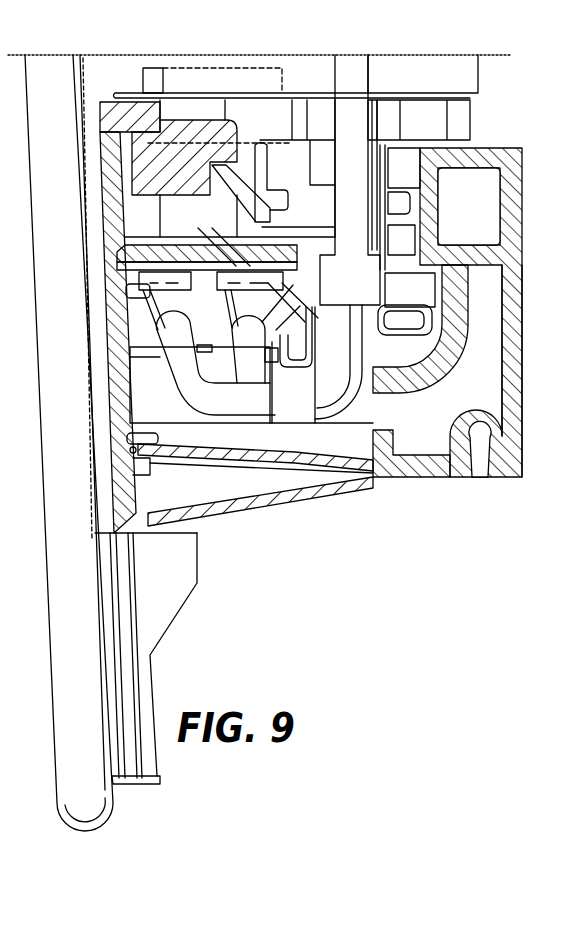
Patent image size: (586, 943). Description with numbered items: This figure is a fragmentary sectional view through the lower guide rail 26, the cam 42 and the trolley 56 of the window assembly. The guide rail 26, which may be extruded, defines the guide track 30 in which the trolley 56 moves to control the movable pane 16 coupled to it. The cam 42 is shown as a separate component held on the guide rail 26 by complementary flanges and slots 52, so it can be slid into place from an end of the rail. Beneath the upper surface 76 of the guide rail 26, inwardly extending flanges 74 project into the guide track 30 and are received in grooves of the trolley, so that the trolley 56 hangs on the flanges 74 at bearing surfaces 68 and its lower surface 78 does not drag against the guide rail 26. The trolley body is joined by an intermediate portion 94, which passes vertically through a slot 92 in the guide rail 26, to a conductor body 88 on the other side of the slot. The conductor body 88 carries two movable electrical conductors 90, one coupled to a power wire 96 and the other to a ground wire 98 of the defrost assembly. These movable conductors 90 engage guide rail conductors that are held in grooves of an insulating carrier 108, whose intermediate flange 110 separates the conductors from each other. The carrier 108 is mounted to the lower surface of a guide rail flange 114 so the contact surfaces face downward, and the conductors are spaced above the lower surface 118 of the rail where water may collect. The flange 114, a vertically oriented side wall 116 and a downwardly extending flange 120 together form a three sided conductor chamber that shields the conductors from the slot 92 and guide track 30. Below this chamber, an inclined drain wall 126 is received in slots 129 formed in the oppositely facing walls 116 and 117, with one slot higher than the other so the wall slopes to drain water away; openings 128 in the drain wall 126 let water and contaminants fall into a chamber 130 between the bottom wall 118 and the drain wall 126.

The movable pane 16 is at (385, 70).
The guide rail 26 is at (529, 378).
The guide track 30 is at (262, 150).
The cam 42 is at (136, 100).
The complementary flanges and slots 52 is at (205, 198).
The trolley 56 is at (288, 155).
The bearing surfaces 68 is at (398, 204).
The inwardly extending flanges 74 is at (289, 203).
The upper surface 76 is at (487, 148).
The lower surface 78 is at (397, 243).
The conductor body 88 is at (140, 410).
The electrical conductor 90 is at (283, 302).
The slot 92 is at (312, 326).
The intermediate portion 94 is at (357, 412).
The power wire 96 is at (248, 347).
The ground wire 98 is at (175, 357).
The carrier 108 is at (135, 291).
The intermediate flange 110 is at (215, 290).
The guide rail flange 114 is at (135, 242).
The side wall 116 is at (133, 533).
The wall 117 is at (375, 433).
The lower surface 118 is at (217, 525).
The downwardly extending flange 120 is at (303, 365).
The drain wall 126 is at (222, 468).
The openings 128 is at (300, 495).
The slots 129 is at (138, 442).
The chamber 130 is at (150, 487).